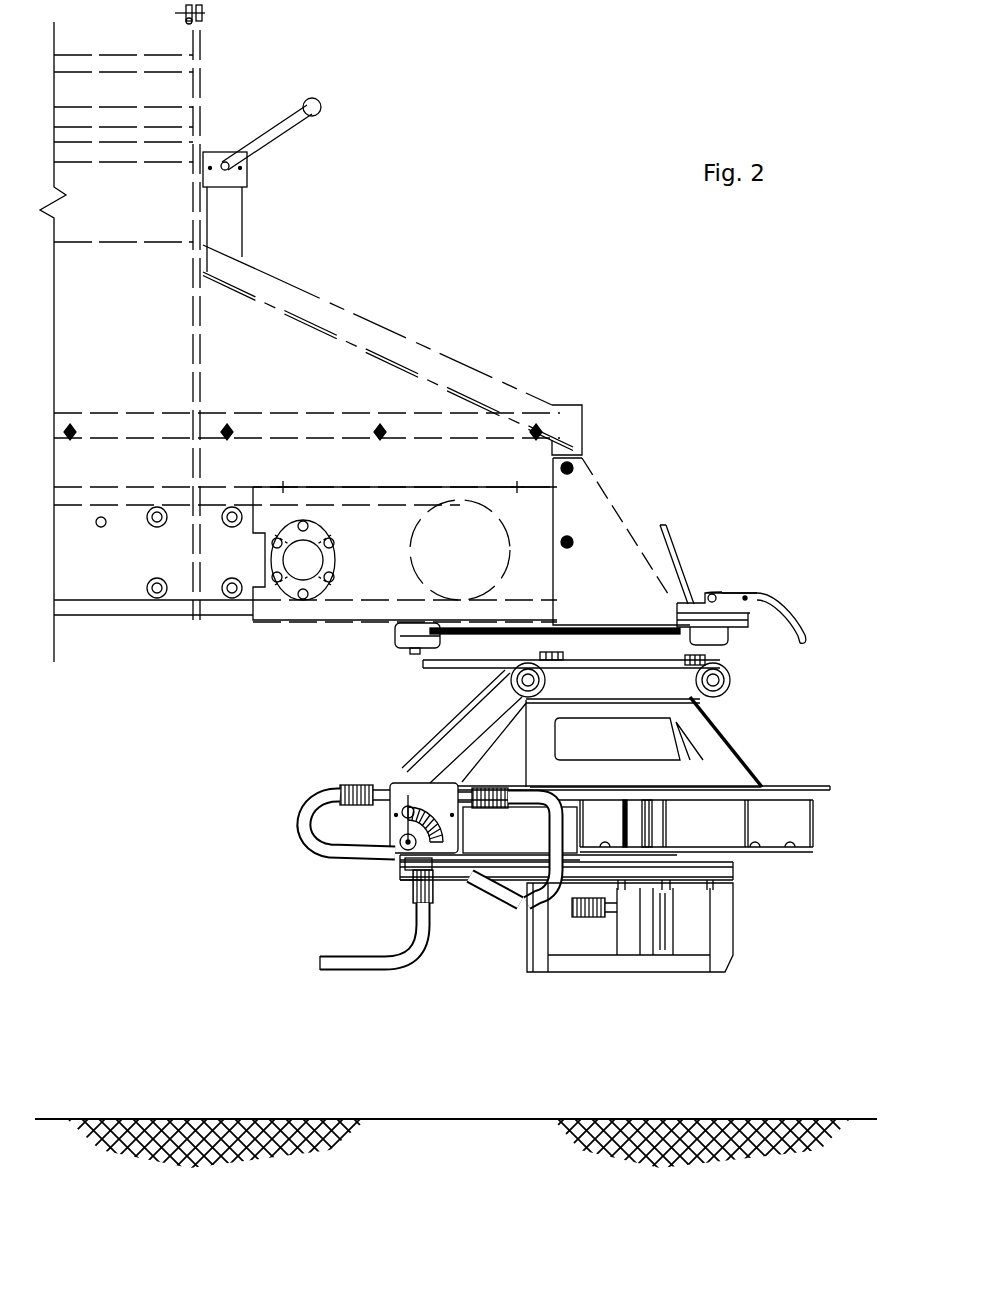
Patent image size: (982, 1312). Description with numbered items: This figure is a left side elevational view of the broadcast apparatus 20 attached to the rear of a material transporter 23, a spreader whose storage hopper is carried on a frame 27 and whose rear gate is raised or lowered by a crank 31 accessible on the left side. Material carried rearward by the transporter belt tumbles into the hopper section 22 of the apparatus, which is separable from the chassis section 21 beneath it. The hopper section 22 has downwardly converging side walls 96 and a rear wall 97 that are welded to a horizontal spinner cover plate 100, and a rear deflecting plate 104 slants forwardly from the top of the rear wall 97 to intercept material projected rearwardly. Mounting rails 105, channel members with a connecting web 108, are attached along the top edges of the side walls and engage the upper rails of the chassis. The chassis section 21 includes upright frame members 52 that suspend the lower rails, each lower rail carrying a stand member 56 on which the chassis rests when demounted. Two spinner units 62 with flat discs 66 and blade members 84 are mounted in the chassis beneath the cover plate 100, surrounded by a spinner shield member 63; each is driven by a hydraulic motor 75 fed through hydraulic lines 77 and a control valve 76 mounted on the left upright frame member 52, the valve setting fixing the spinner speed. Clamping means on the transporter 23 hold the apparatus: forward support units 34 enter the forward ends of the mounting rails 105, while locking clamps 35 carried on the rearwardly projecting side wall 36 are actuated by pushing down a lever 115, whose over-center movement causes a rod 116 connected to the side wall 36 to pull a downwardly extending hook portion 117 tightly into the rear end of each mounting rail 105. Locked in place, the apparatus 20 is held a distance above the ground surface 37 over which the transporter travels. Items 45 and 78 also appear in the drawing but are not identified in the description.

The broadcast apparatus 20 is at (291, 744).
The chassis section 21 is at (759, 895).
The hopper section 22 is at (772, 750).
The material transporter 23 is at (393, 274).
The frame 27 is at (352, 587).
The crank 31 is at (272, 125).
The forward support units 34 is at (390, 633).
The locking clamps 35 is at (784, 640).
The rearwardly projecting side wall 36 is at (612, 527).
The ground surface 37 is at (195, 1118).
The wheels 45 is at (515, 688).
The upright frame members 52 is at (403, 782).
The stand member 56 is at (522, 958).
The spinner units 62 is at (791, 860).
The spinner shield member 63 is at (495, 837).
The flat discs 66 is at (747, 848).
The hydraulic motor 75 is at (633, 938).
The control valve 76 is at (387, 830).
The hydraulic lines 77 is at (345, 965).
The hydraulic hose 78 is at (513, 929).
The blade members 84 is at (787, 818).
The side walls 96 is at (633, 745).
The rear wall 97 is at (758, 750).
The spinner cover plate 100 is at (830, 787).
The rear deflecting plate 104 is at (672, 563).
The mounting rails 105 is at (430, 677).
The connecting web 108 is at (467, 653).
The lever 115 is at (790, 612).
The rod 116 is at (708, 596).
The hook portion 117 is at (742, 642).